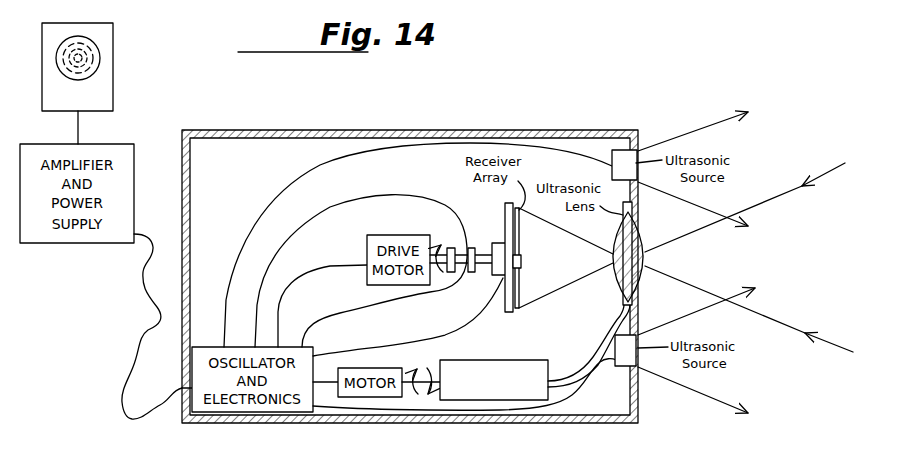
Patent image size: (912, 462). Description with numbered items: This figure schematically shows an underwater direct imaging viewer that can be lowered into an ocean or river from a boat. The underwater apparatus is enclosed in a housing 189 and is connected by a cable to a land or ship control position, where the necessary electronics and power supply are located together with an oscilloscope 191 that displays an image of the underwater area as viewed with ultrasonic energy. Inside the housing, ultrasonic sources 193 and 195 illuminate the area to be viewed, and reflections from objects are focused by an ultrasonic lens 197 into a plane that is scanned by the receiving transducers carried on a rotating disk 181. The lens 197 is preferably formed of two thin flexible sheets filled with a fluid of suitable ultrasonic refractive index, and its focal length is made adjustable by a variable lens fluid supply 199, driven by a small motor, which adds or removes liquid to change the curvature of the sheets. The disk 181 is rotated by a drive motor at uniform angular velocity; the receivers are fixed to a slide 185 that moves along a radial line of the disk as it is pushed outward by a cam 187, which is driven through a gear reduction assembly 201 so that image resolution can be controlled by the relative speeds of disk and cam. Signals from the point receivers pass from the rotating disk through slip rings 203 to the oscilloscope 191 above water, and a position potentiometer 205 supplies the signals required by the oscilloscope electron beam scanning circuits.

The disk 181 is at (509, 313).
The slide 185 is at (520, 236).
The cam 187 is at (522, 265).
The housing 189 is at (497, 130).
The oscilloscope 191 is at (113, 84).
The ultrasonic source 193 is at (624, 151).
The ultrasonic source 195 is at (640, 383).
The ultrasonic lens 197 is at (639, 224).
The lens fluid supply 199 is at (540, 362).
The gear reduction assembly 201 is at (496, 245).
The slip rings 203 is at (472, 273).
The position potentiometer 205 is at (449, 249).